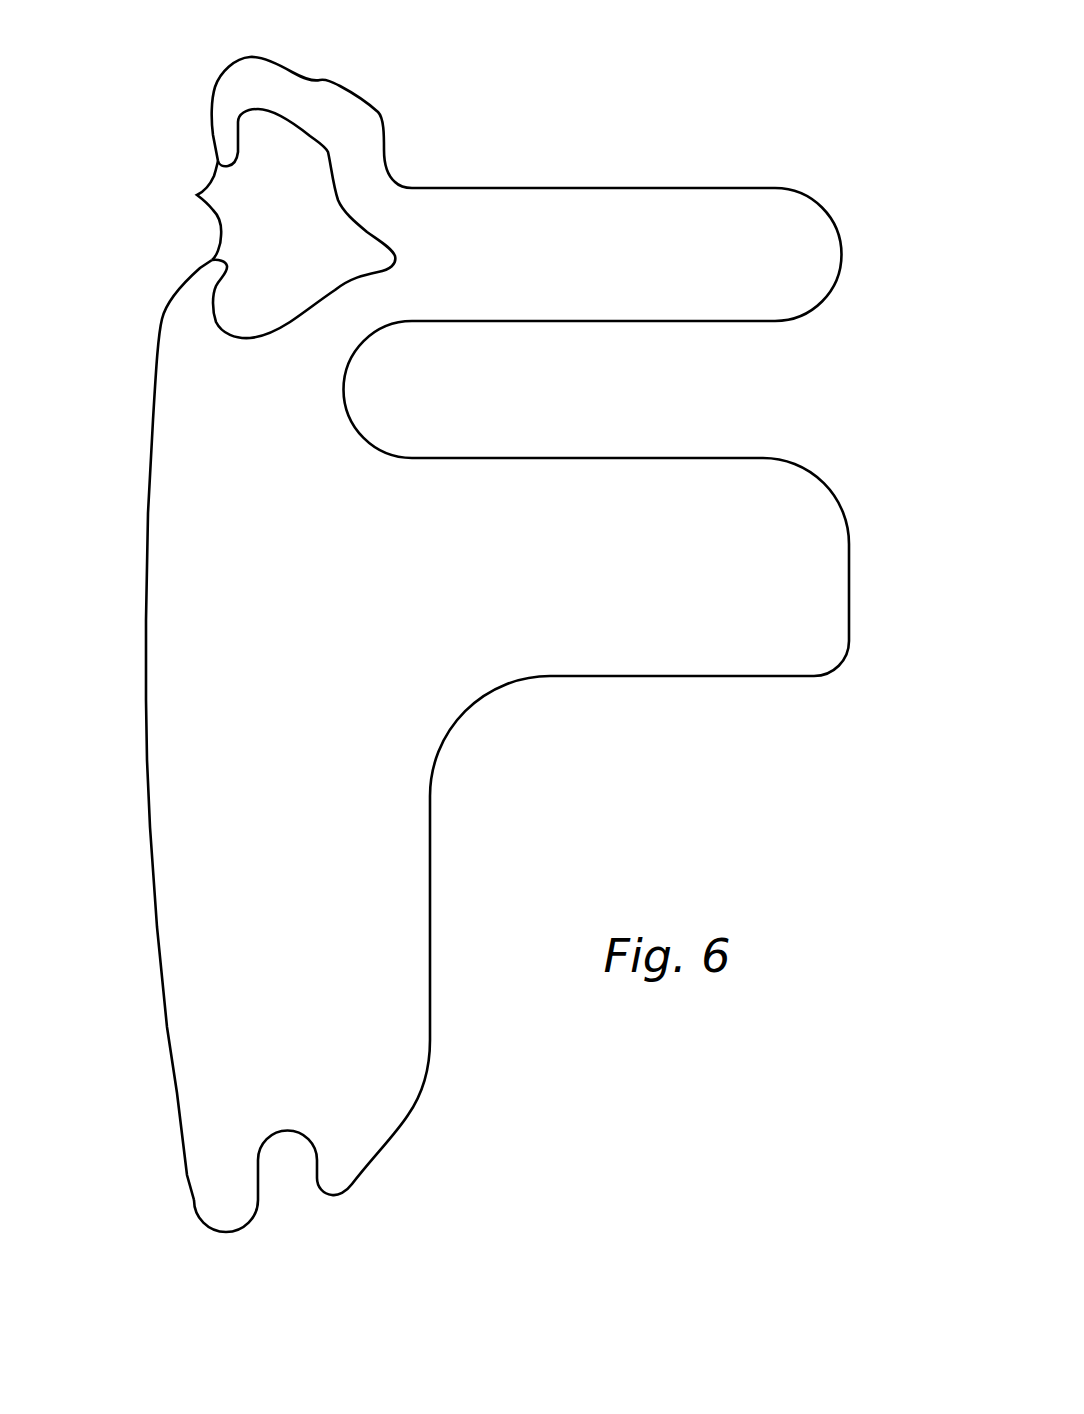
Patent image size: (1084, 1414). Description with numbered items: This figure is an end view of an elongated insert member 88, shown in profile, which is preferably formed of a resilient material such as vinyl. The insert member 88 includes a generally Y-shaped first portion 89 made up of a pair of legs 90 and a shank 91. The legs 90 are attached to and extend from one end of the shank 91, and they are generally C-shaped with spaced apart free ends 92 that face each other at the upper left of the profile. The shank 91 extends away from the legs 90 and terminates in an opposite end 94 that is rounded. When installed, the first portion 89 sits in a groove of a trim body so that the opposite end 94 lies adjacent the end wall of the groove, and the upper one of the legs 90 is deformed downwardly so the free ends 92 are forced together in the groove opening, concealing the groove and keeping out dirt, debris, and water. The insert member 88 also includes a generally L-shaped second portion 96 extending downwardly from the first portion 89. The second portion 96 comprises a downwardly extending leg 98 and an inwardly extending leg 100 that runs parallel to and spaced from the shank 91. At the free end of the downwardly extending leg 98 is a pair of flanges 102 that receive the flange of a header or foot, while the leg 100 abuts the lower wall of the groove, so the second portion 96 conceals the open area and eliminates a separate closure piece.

The elongated insert member 88 is at (639, 583).
The first portion 89 is at (598, 186).
The legs 90 is at (253, 69).
The shank 91 is at (600, 268).
The free ends 92 is at (197, 195).
The opposite end 94 is at (820, 208).
The second portion 96 is at (141, 772).
The downwardly extending leg 98 is at (407, 847).
The inwardly extending leg 100 is at (703, 652).
The flanges 102 is at (345, 1155).